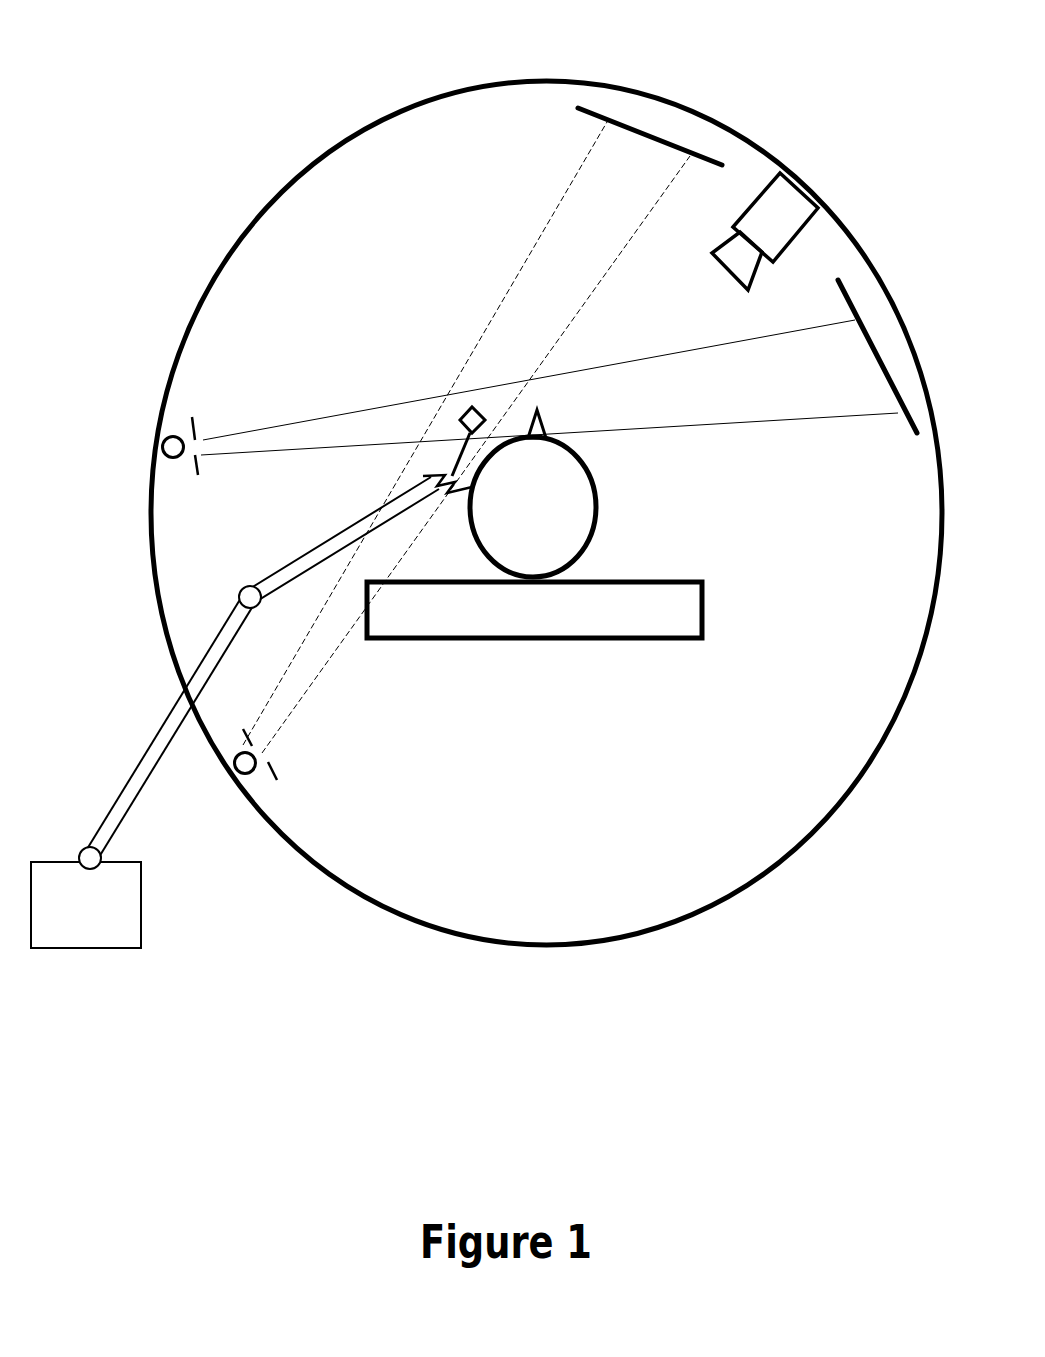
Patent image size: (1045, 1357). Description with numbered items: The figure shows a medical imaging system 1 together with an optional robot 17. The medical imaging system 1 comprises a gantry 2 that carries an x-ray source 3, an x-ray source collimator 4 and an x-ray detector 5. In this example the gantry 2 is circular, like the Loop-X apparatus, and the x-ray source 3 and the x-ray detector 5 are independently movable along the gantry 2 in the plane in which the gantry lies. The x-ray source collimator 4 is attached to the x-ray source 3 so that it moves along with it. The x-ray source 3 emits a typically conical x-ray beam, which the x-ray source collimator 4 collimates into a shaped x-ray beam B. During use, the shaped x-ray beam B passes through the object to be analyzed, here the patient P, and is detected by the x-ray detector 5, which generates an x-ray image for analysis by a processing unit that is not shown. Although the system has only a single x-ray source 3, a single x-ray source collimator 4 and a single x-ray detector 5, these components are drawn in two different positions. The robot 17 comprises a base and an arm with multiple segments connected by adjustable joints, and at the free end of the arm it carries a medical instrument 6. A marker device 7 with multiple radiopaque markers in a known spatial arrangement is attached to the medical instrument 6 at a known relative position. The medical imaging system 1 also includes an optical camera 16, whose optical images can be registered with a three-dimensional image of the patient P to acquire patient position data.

The medical imaging system 1 is at (190, 108).
The gantry 2 is at (370, 120).
The shaped x-ray beam B is at (555, 222).
The x-ray detector 5 is at (662, 138).
The optical camera 16 is at (790, 198).
The marker device 7 is at (462, 412).
The medical instrument 6 is at (440, 480).
The robot 17 is at (97, 712).
The x-ray source 3 is at (240, 783).
The x-ray source collimator 4 is at (265, 757).
The patient P is at (573, 547).